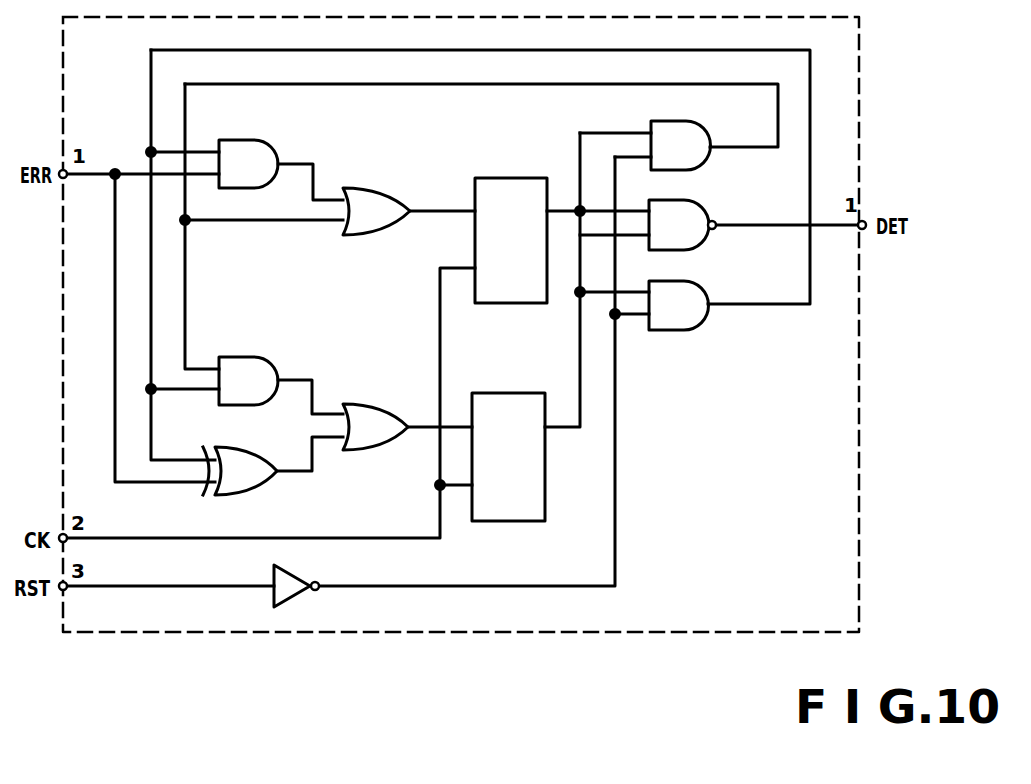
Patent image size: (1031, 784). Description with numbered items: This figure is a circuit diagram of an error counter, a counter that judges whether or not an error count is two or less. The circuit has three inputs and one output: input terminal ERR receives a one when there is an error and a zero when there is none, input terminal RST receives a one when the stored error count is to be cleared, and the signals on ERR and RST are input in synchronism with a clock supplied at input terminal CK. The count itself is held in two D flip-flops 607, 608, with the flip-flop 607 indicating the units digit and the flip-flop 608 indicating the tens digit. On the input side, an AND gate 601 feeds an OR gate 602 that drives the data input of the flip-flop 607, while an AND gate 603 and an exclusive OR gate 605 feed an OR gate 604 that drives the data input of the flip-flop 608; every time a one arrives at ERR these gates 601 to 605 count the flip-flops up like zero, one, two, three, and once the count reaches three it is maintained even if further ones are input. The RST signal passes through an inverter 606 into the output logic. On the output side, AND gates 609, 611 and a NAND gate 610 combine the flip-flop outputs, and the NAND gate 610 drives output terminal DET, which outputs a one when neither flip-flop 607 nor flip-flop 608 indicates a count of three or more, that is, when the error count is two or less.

The AND gate 601 is at (262, 140).
The OR gate 602 is at (376, 187).
The AND gate 603 is at (248, 357).
The OR gate 604 is at (372, 403).
The exclusive OR gate 605 is at (268, 488).
The inverter 606 is at (305, 572).
The D flip-flop 607 is at (528, 178).
The D flip-flop 608 is at (530, 393).
The AND gate 609 is at (705, 162).
The NAND gate 610 is at (705, 243).
The AND gate 611 is at (705, 322).